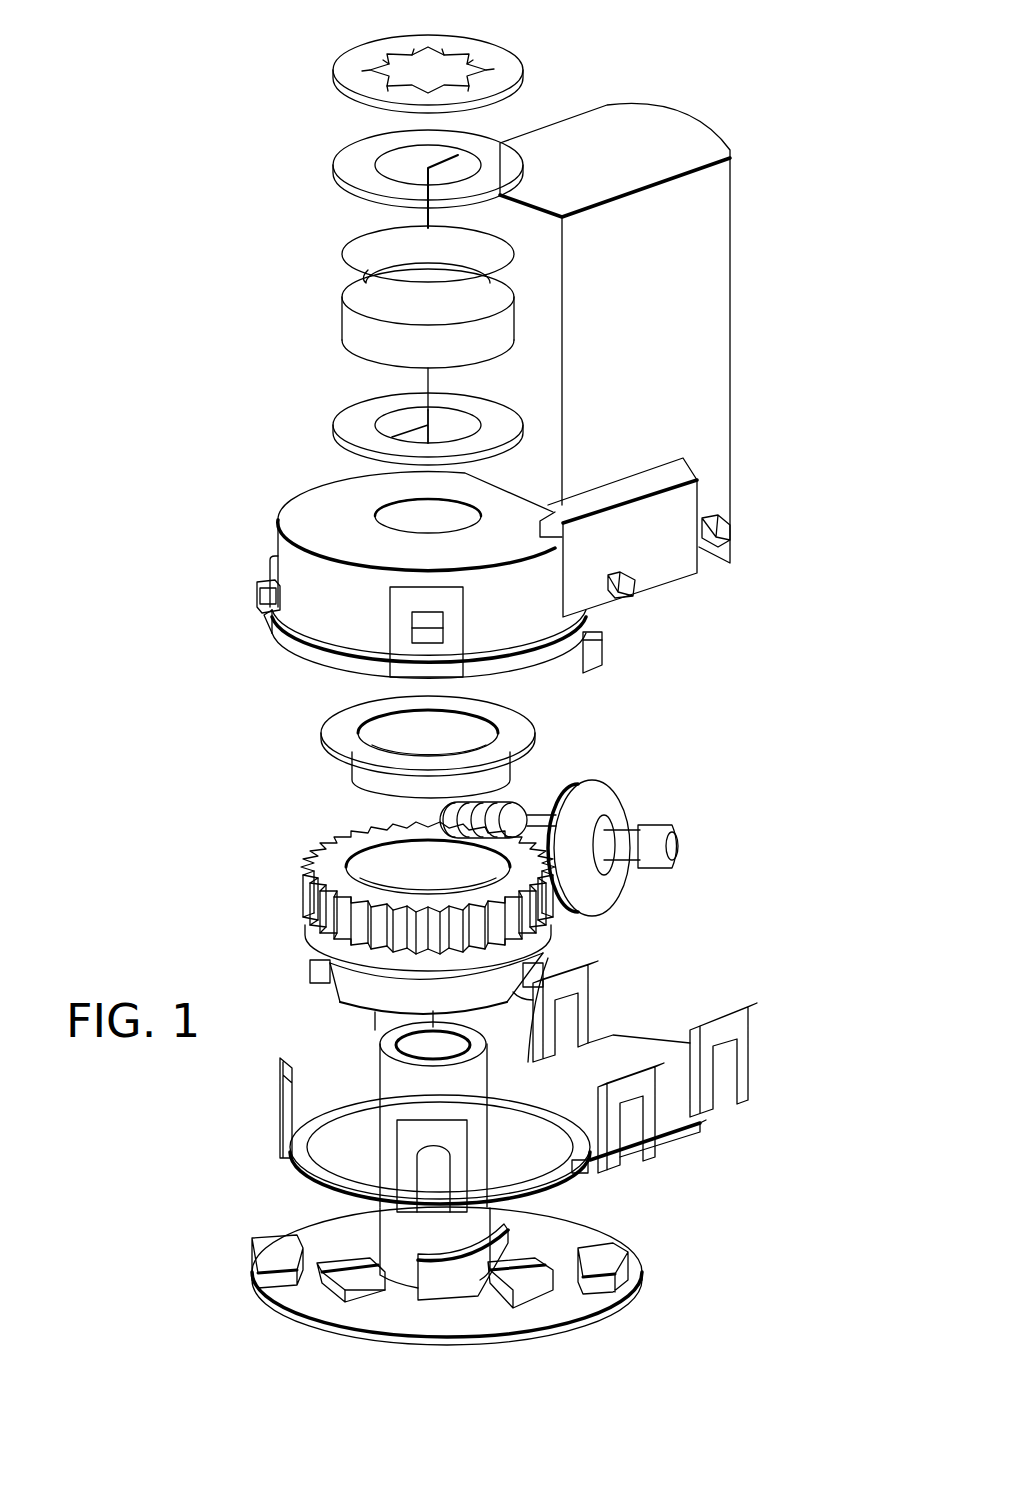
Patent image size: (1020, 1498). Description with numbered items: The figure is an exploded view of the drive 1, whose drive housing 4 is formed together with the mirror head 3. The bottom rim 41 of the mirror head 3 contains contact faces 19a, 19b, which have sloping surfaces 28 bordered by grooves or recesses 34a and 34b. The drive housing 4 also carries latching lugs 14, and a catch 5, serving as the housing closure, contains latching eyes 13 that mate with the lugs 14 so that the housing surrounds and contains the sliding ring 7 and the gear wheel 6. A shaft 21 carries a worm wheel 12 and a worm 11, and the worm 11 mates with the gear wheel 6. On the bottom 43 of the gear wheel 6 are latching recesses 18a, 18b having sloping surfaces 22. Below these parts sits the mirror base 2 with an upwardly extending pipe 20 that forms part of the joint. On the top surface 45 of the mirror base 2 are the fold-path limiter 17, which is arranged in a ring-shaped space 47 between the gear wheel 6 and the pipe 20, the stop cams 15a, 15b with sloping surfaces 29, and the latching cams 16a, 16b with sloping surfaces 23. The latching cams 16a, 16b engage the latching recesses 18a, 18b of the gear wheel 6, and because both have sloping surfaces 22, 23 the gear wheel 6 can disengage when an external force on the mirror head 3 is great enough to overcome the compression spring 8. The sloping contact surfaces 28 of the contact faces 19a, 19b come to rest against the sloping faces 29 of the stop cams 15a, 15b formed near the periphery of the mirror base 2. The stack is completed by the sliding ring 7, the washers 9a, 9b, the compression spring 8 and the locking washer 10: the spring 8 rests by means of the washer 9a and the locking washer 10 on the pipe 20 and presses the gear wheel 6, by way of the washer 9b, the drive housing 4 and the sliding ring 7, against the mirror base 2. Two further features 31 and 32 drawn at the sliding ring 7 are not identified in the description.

The drive 1 is at (812, 550).
The mirror base 2 is at (558, 1312).
The mirror head 3 is at (298, 496).
The drive housing 4 is at (690, 575).
The catch 5 is at (688, 1125).
The gear wheel 6 is at (322, 858).
The sliding ring 7 is at (338, 728).
The compression spring 8 is at (350, 312).
The washer 9a is at (348, 160).
The washer 9b is at (345, 422).
The locking washer 10 is at (350, 52).
The worm 11 is at (495, 805).
The worm wheel 12 is at (610, 900).
The latching eyes 13 is at (281, 1098).
The latching lugs 14 is at (730, 524).
The stop cam 15a is at (275, 1240).
The stop cam 15b is at (620, 1250).
The latching cam 16a is at (320, 1285).
The latching cam 16b is at (552, 1242).
The fold-path limiter 17 is at (450, 1292).
The latching recess 18a is at (318, 985).
The latching recess 18b is at (522, 1000).
The contact face 19a is at (262, 590).
The contact face 19b is at (595, 658).
The pipe 20 is at (455, 1098).
The shaft 21 is at (625, 828).
The sloping surfaces 22 is at (345, 992).
The sloping surfaces 23 is at (368, 1298).
The sloping surfaces 28 is at (470, 675).
The sloping surfaces 29 is at (268, 1288).
The hub 31 is at (372, 782).
The bore 32 is at (520, 735).
The groove or recess 34a is at (268, 617).
The groove or recess 34b is at (610, 630).
The bottom rim 41 is at (300, 668).
The bottom 43 is at (368, 1018).
The top surface 45 is at (475, 1325).
The ring-shaped space 47 is at (578, 1238).